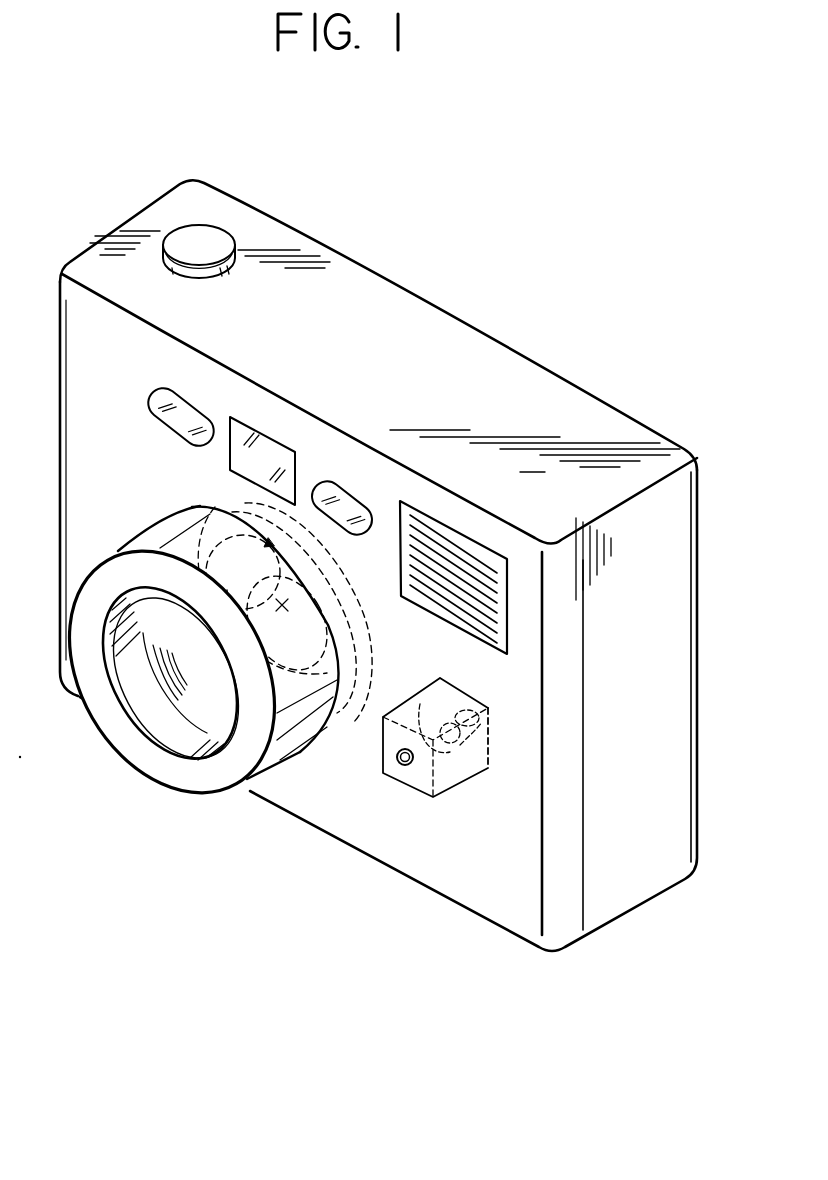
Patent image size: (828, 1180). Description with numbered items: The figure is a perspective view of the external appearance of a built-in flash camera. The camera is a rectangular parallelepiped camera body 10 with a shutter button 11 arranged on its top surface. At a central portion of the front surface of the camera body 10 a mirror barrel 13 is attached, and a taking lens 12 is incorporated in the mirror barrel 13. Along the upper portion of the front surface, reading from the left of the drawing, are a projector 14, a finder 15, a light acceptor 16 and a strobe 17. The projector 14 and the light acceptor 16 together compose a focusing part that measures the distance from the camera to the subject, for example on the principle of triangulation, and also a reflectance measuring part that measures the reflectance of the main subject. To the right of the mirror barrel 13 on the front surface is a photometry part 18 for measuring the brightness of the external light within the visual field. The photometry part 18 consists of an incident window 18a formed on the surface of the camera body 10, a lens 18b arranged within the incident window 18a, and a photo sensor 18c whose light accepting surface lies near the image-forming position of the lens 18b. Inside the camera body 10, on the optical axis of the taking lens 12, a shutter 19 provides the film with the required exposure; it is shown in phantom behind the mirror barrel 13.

The camera body 10 is at (543, 388).
The shutter button 11 is at (207, 236).
The taking lens 12 is at (210, 712).
The mirror barrel 13 is at (287, 748).
The projector 14 is at (176, 395).
The finder 15 is at (272, 445).
The light acceptor 16 is at (348, 497).
The strobe 17 is at (448, 545).
The photometry part 18 is at (452, 798).
The incident window 18a is at (404, 766).
The lens 18b is at (430, 735).
The photo sensor 18c is at (487, 767).
The shutter 19 is at (353, 723).